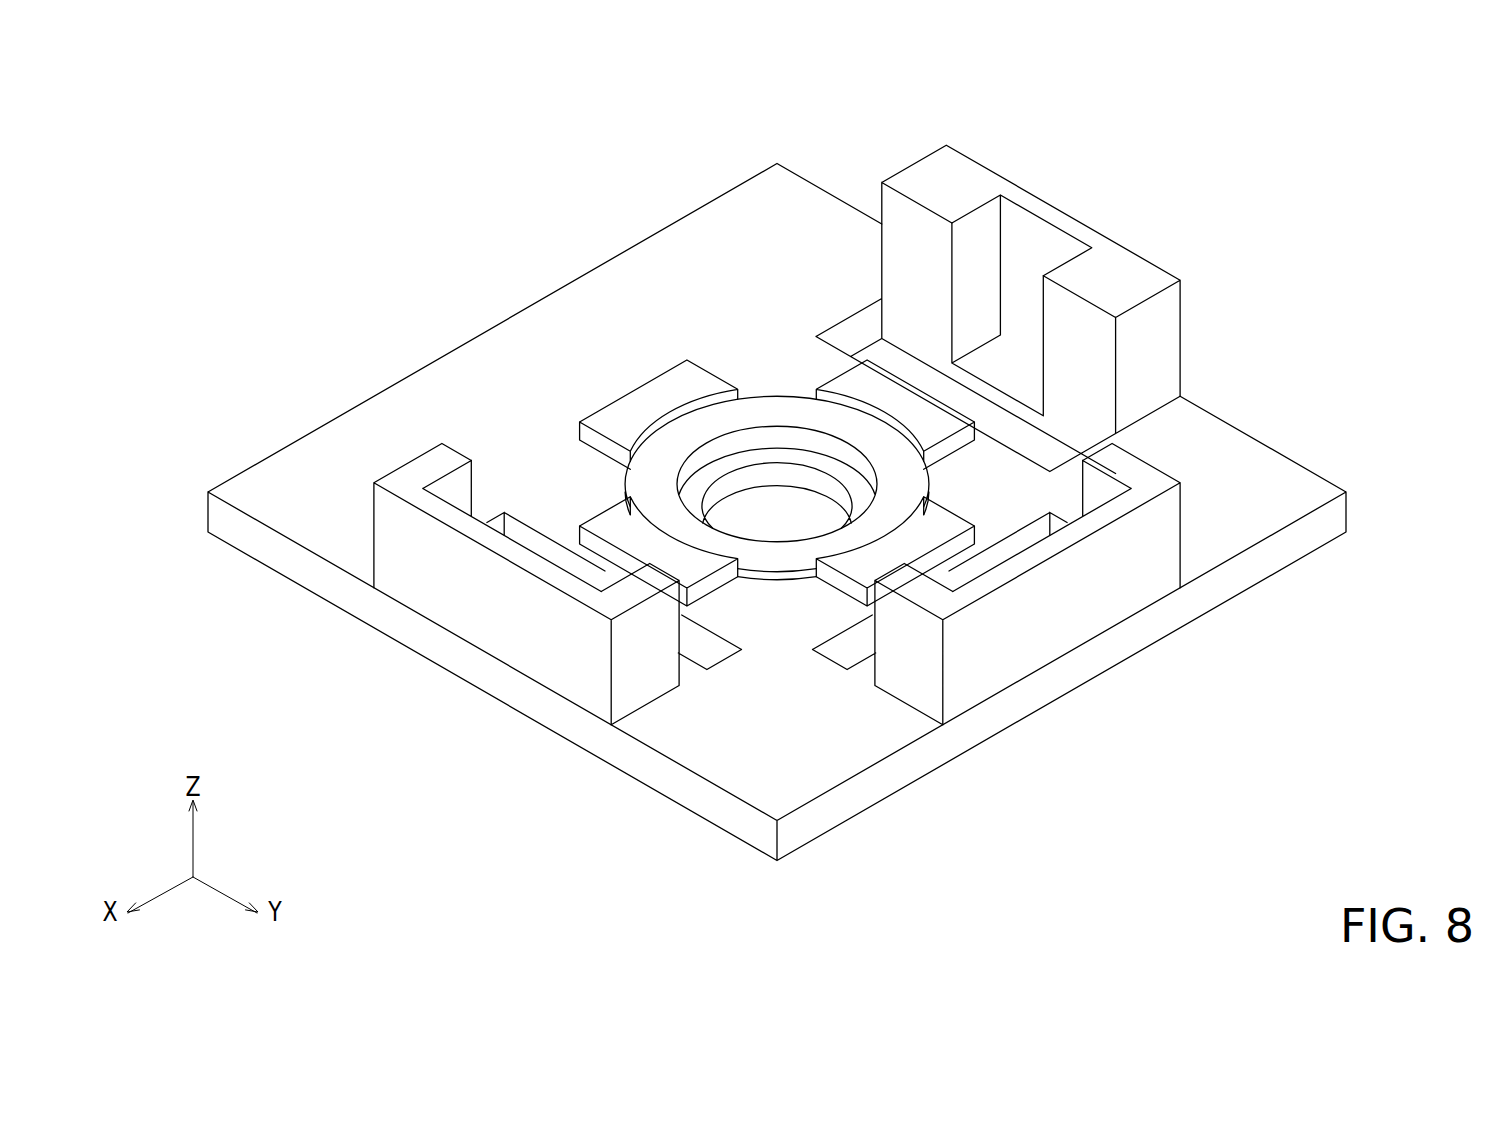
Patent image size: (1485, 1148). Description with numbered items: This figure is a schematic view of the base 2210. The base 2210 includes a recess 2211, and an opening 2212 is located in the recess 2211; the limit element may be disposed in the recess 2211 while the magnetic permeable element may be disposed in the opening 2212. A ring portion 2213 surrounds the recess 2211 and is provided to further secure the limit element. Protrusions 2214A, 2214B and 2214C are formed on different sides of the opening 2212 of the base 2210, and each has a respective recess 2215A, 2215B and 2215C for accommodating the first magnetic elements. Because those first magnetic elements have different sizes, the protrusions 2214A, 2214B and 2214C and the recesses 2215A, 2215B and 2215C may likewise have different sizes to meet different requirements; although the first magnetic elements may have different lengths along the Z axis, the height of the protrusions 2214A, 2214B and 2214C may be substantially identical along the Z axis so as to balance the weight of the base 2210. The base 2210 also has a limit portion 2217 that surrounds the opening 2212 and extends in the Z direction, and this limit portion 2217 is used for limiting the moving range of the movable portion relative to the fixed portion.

The base 2210 is at (667, 213).
The recess 2211 is at (757, 437).
The opening 2212 is at (782, 470).
The ring portion 2213 is at (782, 557).
The protrusion 2214A is at (431, 529).
The protrusion 2214B is at (1083, 529).
The protrusion 2214C is at (1057, 309).
The recess 2215A is at (453, 480).
The recess 2215B is at (1106, 481).
The recess 2215C is at (1041, 236).
The limit portion 2217 is at (914, 398).